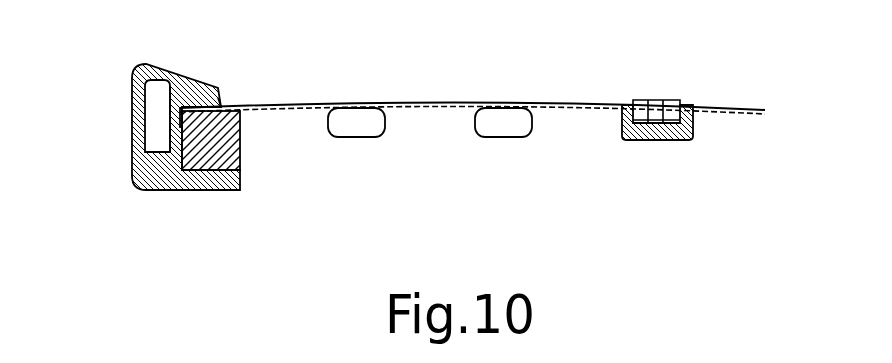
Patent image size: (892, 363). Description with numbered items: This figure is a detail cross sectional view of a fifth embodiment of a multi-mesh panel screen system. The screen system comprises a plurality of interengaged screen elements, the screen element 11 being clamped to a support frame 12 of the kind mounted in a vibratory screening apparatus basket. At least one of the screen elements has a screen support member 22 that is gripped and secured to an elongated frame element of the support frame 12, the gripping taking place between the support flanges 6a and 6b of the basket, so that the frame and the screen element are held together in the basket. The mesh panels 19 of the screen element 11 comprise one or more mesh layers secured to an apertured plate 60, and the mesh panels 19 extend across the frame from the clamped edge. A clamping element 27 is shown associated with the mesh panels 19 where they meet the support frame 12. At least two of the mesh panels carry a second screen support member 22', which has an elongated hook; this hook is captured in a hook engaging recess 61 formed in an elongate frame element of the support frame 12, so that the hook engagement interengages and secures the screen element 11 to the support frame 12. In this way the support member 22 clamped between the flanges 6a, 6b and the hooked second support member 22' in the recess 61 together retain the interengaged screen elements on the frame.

The support flange 6a is at (193, 190).
The support flange 6b is at (168, 62).
The screen support member 22 is at (122, 123).
The second screen support member 22' is at (665, 75).
The mesh panel clamping element 27 is at (222, 104).
The support frame 12 is at (228, 146).
The mesh panel 19 is at (352, 105).
The screen element 11 is at (512, 103).
The apertured plate 60 is at (575, 113).
The hook engaging recess 61 is at (668, 141).